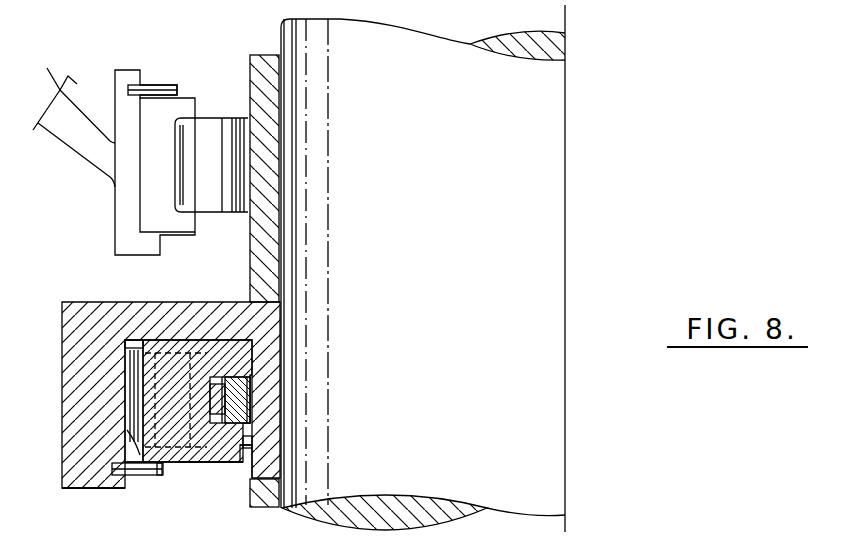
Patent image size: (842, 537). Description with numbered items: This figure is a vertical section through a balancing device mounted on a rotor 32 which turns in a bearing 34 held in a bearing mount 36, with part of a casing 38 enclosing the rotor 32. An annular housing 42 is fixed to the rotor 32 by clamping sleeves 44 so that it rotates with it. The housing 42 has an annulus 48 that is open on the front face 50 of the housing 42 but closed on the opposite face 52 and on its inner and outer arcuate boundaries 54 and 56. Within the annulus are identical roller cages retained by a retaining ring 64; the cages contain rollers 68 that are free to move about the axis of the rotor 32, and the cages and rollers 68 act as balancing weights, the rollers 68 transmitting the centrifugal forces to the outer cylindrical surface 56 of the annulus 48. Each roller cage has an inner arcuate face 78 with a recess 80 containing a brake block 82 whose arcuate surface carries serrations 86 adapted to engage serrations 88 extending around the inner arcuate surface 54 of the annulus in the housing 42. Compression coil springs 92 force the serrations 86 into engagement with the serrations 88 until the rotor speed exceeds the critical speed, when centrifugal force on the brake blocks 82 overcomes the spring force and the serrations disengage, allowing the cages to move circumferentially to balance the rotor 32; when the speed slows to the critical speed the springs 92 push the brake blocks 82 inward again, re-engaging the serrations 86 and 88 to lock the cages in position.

The rotor 32 is at (392, 300).
The bearing 34 is at (216, 112).
The bearing mount 36 is at (132, 62).
The casing 38 is at (88, 121).
The annular housing 42 is at (60, 298).
The clamping sleeves 44 is at (276, 96).
The annulus 48 is at (141, 340).
The front face 50 is at (99, 490).
The opposite face 52 is at (105, 302).
The inner arcuate boundary 54 is at (247, 467).
The outer arcuate boundary 56 is at (142, 476).
The retaining ring 64 is at (166, 477).
The rollers 68 is at (125, 405).
The inner arcuate face 78 is at (252, 443).
The recess 80 is at (208, 464).
The brake block 82 is at (240, 383).
The serrations 86 is at (250, 408).
The serrations 88 is at (247, 375).
The compression coil springs 92 is at (221, 385).